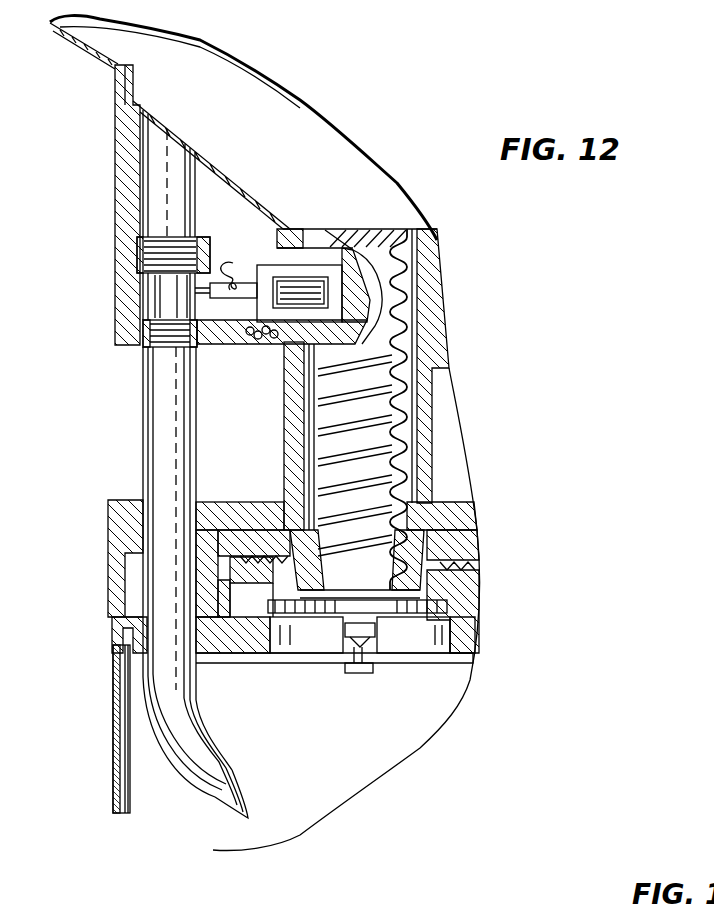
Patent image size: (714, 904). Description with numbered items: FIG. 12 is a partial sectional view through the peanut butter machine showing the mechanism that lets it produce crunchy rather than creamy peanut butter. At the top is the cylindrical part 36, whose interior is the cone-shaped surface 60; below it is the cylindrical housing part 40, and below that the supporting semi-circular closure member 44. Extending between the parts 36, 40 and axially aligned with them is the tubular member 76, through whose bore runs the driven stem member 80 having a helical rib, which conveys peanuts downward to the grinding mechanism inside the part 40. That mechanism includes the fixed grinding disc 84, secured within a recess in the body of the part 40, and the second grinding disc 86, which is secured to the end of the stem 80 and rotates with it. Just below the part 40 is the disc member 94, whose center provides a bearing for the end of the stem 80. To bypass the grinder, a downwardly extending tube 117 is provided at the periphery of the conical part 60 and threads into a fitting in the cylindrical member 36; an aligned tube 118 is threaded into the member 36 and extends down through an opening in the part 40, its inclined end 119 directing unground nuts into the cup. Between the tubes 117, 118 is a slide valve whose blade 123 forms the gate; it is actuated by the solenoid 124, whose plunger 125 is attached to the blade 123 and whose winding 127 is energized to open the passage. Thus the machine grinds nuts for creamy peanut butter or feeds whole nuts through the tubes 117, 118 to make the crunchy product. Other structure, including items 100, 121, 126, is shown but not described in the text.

The cylindrical part 36 is at (100, 260).
The cylindrical housing part 40 is at (100, 543).
The supporting semi-circular closure member 44 is at (108, 743).
The cone-shaped interior surface 60 is at (238, 176).
The tubular member 76 is at (287, 432).
The stem member having a helical rib 80 is at (385, 458).
The fixed grinding disc 84 is at (465, 550).
The second grinding disc 86 is at (427, 590).
The disc member 94 is at (107, 638).
The inner sleeve 100 is at (125, 813).
The downwardly extending tube 117 is at (160, 188).
The tube 118 is at (167, 527).
The inclined end 119 is at (213, 785).
The upper nut 121 is at (160, 300).
The slide gate or blade 123 is at (175, 330).
The solenoid 124 is at (322, 260).
The plunger 125 is at (252, 325).
The wire 126 is at (225, 266).
The winding 127 is at (322, 295).